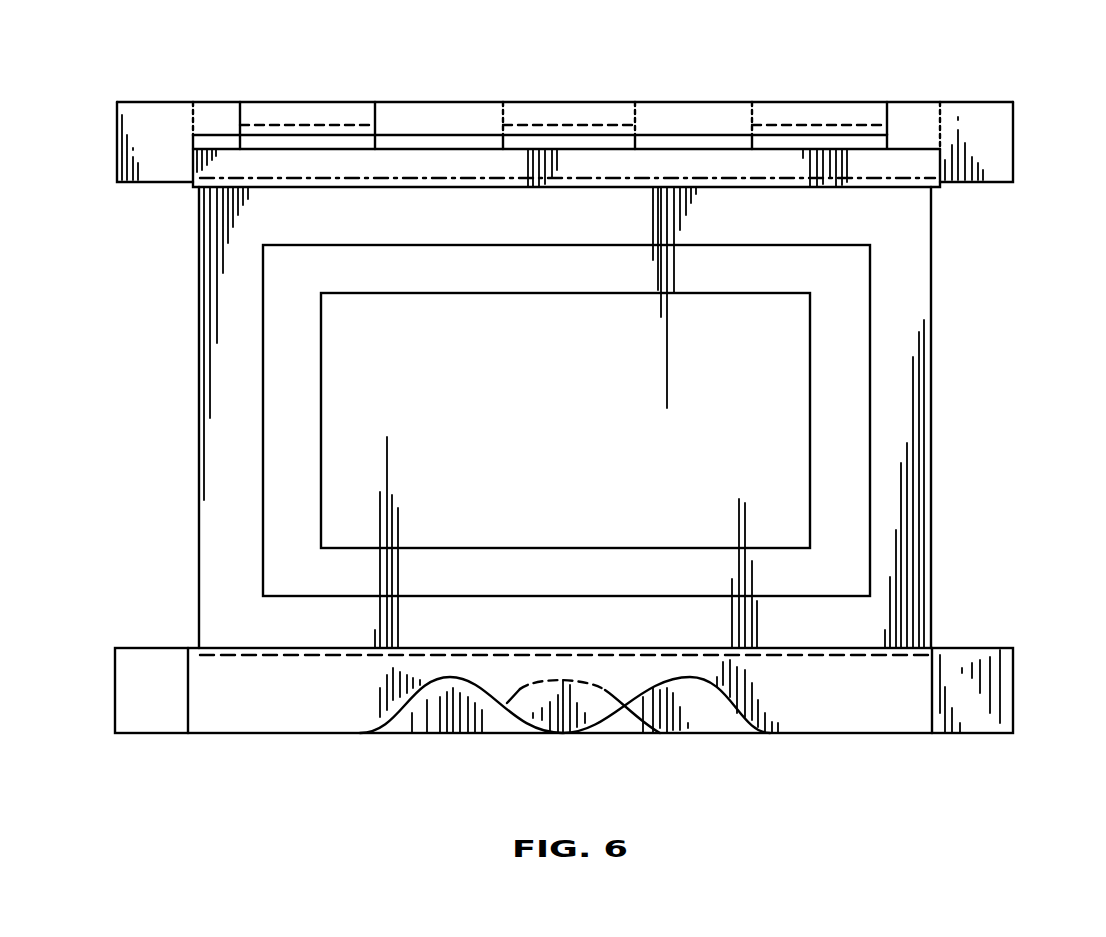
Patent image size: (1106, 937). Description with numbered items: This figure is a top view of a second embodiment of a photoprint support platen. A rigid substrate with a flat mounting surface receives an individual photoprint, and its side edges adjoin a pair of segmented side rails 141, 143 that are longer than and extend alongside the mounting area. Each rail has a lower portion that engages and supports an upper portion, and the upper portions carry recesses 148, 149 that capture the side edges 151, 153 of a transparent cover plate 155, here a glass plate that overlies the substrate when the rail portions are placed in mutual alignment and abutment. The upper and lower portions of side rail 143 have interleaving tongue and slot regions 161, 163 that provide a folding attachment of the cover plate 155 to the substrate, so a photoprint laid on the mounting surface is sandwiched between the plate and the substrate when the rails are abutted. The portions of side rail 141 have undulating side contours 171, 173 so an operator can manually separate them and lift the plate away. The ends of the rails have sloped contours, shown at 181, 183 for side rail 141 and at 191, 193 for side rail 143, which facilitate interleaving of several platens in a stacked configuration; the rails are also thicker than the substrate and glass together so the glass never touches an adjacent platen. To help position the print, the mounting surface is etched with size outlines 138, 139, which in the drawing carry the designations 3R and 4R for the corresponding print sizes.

The size outline 138 is at (581, 295).
The size outline 139 is at (697, 246).
The side rail 141 is at (966, 648).
The side rail 143 is at (985, 188).
The recess 148 is at (405, 655).
The recess 149 is at (312, 185).
The side edge of transparent cover plate 151 is at (305, 660).
The side edge of transparent cover plate 153 is at (461, 183).
The transparent cover plate 155 is at (910, 396).
The tongue region 161 is at (290, 143).
The slot region 163 is at (377, 113).
The undulating side contour 171 is at (557, 738).
The undulating side contour 173 is at (660, 735).
The sloped contour 181 is at (1000, 688).
The sloped contour 183 is at (148, 733).
The sloped contour 191 is at (983, 122).
The sloped contour 193 is at (140, 172).
The third region 3R is at (781, 533).
The fourth region 4R is at (848, 584).